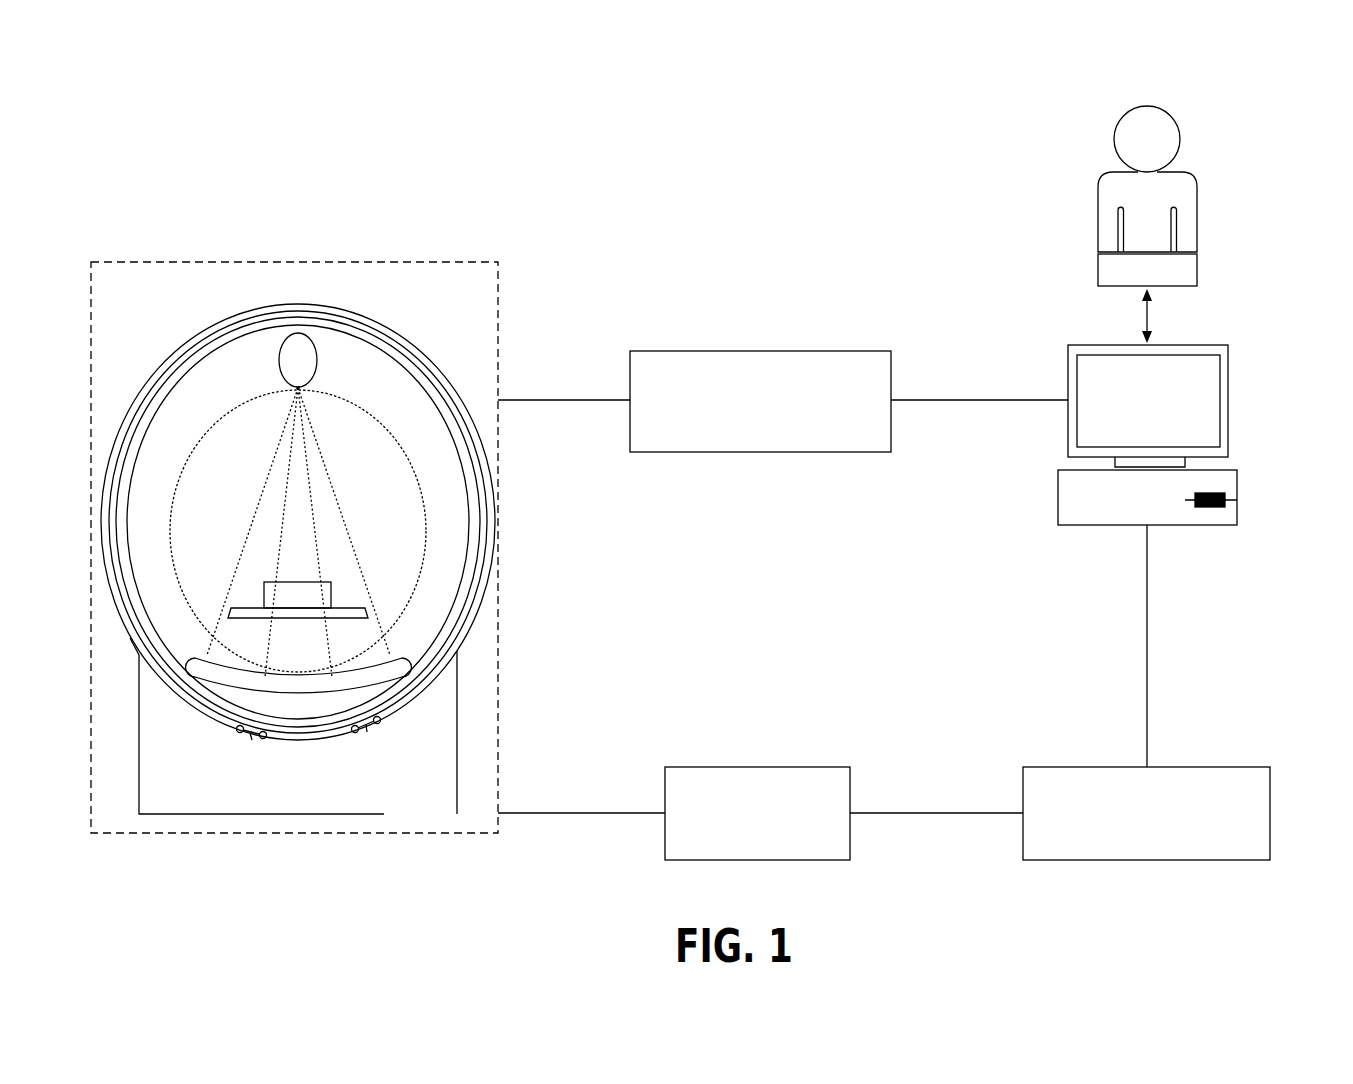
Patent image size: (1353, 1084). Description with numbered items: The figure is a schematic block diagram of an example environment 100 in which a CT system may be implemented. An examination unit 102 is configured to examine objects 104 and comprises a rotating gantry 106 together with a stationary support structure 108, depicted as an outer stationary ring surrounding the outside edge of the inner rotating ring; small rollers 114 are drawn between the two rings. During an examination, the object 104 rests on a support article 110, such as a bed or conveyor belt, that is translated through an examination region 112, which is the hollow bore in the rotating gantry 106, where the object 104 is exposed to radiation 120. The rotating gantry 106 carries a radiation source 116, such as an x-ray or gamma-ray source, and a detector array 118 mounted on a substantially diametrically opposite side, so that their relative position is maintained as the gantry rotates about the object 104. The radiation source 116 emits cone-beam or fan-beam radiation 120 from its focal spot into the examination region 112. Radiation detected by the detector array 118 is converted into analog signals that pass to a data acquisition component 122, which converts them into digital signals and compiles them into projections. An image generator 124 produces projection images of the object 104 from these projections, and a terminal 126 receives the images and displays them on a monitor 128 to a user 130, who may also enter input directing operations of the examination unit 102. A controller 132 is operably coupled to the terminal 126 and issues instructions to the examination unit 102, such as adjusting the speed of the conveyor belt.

The environment 100 is at (842, 97).
The examination unit 102 is at (500, 262).
The object 104 is at (332, 595).
The rotating gantry 106 is at (176, 354).
The support structure 108 is at (420, 344).
The support article 110 is at (237, 606).
The examination region 112 is at (291, 547).
The rotating member bearings 114 is at (381, 723).
The radiation source 116 is at (312, 336).
The detector array 118 is at (221, 684).
The radiation 120 is at (262, 484).
The data acquisition component 122 is at (851, 836).
The image generator 124 is at (1248, 768).
The terminal 126 is at (1238, 470).
The monitor 128 is at (1229, 345).
The user 130 is at (1196, 189).
The controller 132 is at (761, 351).